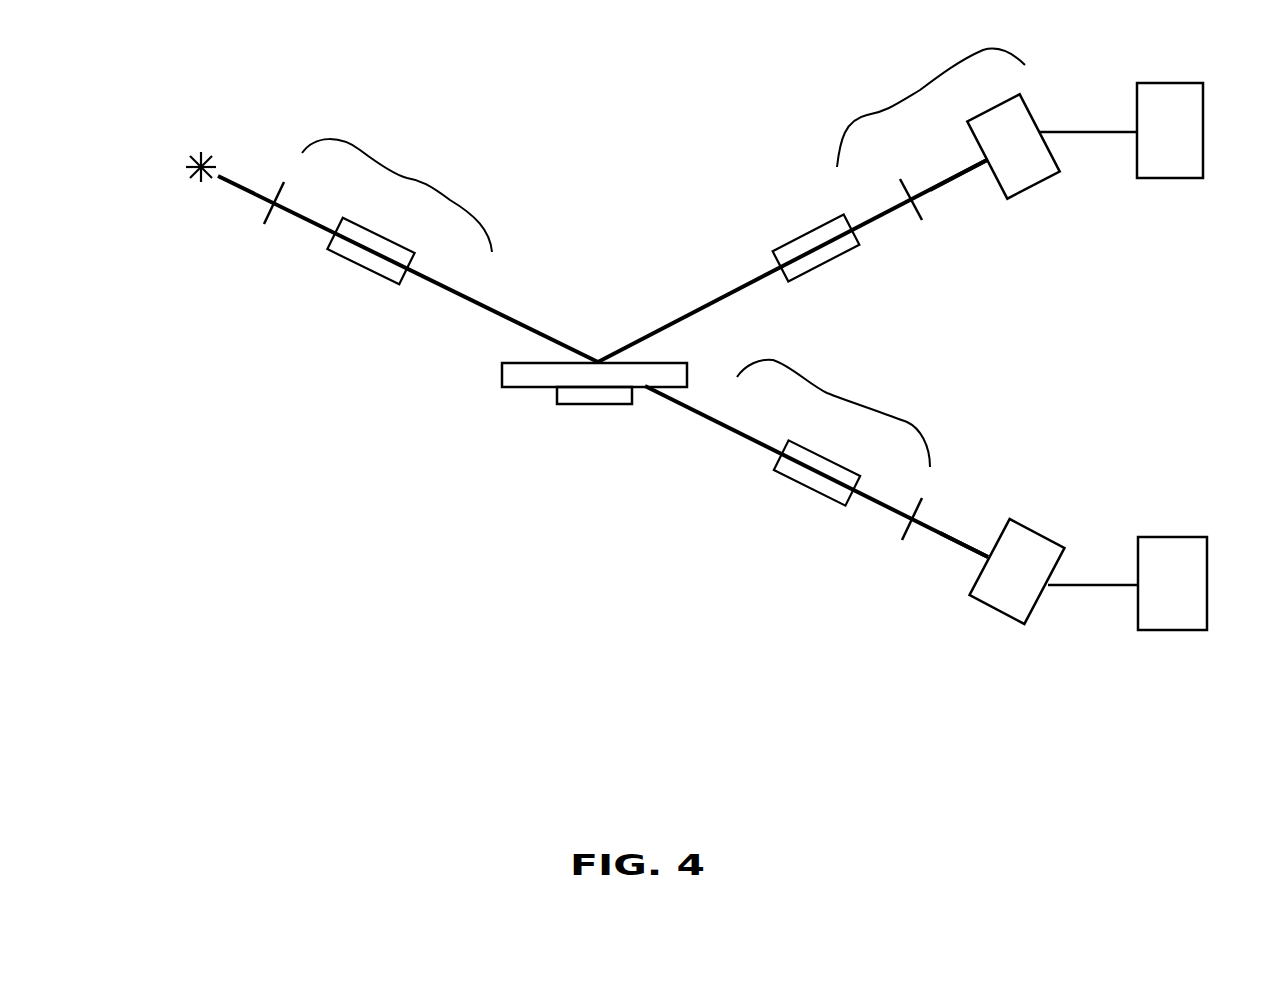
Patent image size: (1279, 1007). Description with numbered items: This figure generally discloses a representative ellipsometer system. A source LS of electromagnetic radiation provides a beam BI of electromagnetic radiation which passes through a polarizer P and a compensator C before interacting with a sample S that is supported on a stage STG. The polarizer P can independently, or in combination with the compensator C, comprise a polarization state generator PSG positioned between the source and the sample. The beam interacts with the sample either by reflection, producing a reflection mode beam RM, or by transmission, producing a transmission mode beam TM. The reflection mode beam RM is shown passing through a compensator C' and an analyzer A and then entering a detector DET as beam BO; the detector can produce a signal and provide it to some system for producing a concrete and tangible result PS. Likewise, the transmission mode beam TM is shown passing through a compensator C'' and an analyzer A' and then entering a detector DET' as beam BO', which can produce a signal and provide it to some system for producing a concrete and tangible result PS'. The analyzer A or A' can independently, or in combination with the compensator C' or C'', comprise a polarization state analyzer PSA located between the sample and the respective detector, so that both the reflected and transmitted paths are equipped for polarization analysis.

The source of electromagnetic radiation LS is at (172, 158).
The beam of electromagnetic radiation BI is at (240, 199).
The polarizer P is at (268, 224).
The compensator C is at (370, 265).
The polarization state generator PSG is at (397, 195).
The sample S is at (493, 379).
The stage STG is at (553, 409).
The reflection mode beam RM is at (746, 184).
The compensator C' is at (816, 266).
The analyzer A is at (900, 180).
The beam BO is at (958, 239).
The polarization state analyzer PSA is at (881, 256).
The detector DET is at (1065, 104).
The system for producing a concrete and tangible result PS is at (1121, 130).
The transmission mode beam TM is at (750, 572).
The compensator C'' is at (816, 487).
The analyzer A' is at (906, 539).
The beam BO' is at (1003, 505).
The detector DET' is at (958, 594).
The system for producing a concrete and tangible result PS' is at (1127, 583).